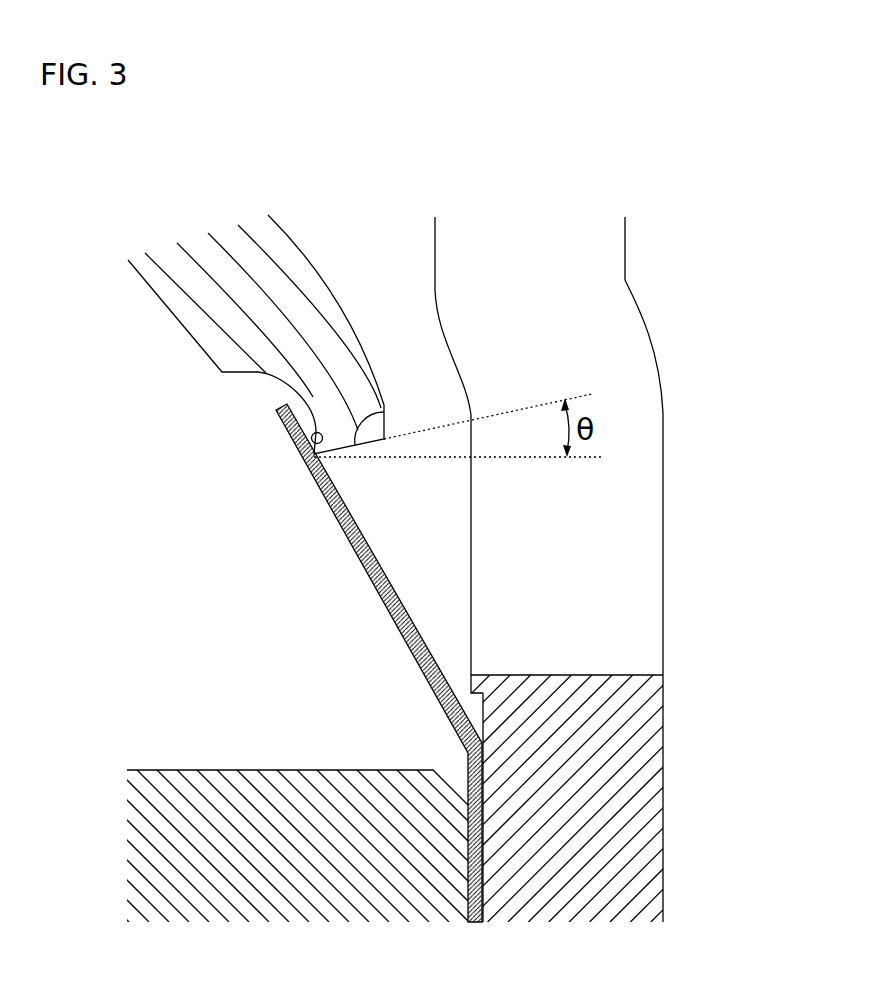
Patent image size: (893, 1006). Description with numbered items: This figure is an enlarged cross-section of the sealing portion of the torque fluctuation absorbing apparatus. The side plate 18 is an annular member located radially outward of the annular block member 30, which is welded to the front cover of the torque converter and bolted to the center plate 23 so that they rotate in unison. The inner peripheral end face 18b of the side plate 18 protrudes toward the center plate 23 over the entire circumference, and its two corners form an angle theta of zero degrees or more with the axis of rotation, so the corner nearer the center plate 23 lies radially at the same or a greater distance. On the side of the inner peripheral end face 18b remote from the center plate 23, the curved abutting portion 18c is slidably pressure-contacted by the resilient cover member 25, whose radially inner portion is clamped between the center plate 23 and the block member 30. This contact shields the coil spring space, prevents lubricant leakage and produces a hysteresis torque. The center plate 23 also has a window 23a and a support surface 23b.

The side plate 18 is at (182, 287).
The inner peripheral end face 18b is at (384, 412).
The abutting portion 18c is at (312, 438).
The cover member 25 is at (352, 550).
The block member 30 is at (172, 782).
The center plate 23 is at (640, 828).
The window 23a is at (640, 545).
The support surface 23b is at (483, 863).